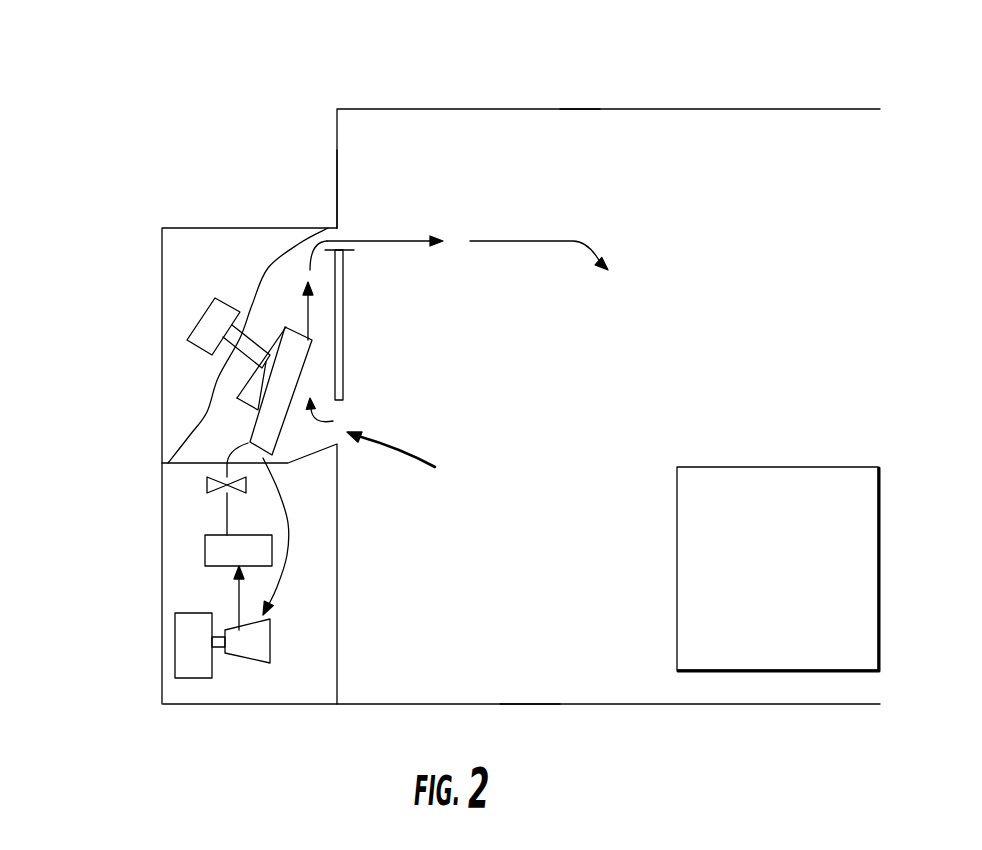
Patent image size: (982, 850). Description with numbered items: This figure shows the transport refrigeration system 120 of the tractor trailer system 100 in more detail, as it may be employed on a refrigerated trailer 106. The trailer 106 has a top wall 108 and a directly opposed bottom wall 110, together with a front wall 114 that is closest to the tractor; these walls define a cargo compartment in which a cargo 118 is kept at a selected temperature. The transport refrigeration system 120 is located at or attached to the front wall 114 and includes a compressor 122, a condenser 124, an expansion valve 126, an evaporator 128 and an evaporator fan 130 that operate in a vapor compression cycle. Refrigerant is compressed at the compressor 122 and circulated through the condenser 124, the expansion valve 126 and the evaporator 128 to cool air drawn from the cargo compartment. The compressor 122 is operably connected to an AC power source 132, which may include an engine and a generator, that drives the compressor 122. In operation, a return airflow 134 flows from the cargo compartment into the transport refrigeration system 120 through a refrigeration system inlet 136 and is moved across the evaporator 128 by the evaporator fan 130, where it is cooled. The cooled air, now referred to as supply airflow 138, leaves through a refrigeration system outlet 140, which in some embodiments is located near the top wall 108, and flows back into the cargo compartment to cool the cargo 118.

The tractor trailer system 100 is at (236, 91).
The trailer 106 is at (803, 142).
The top wall 108 is at (567, 109).
The bottom wall 110 is at (525, 704).
The front wall 114 is at (336, 180).
The cargo 118 is at (796, 583).
The transport refrigeration system 120 is at (144, 200).
The compressor 122 is at (253, 660).
The condenser 124 is at (205, 550).
The expansion valve 126 is at (207, 485).
The evaporator 128 is at (317, 359).
The evaporator fan 130 is at (240, 388).
The AC power source 132 is at (185, 637).
The return airflow 134 is at (403, 463).
The refrigeration system inlet 136 is at (342, 420).
The supply airflow 138 is at (518, 238).
The refrigeration system outlet 140 is at (335, 234).